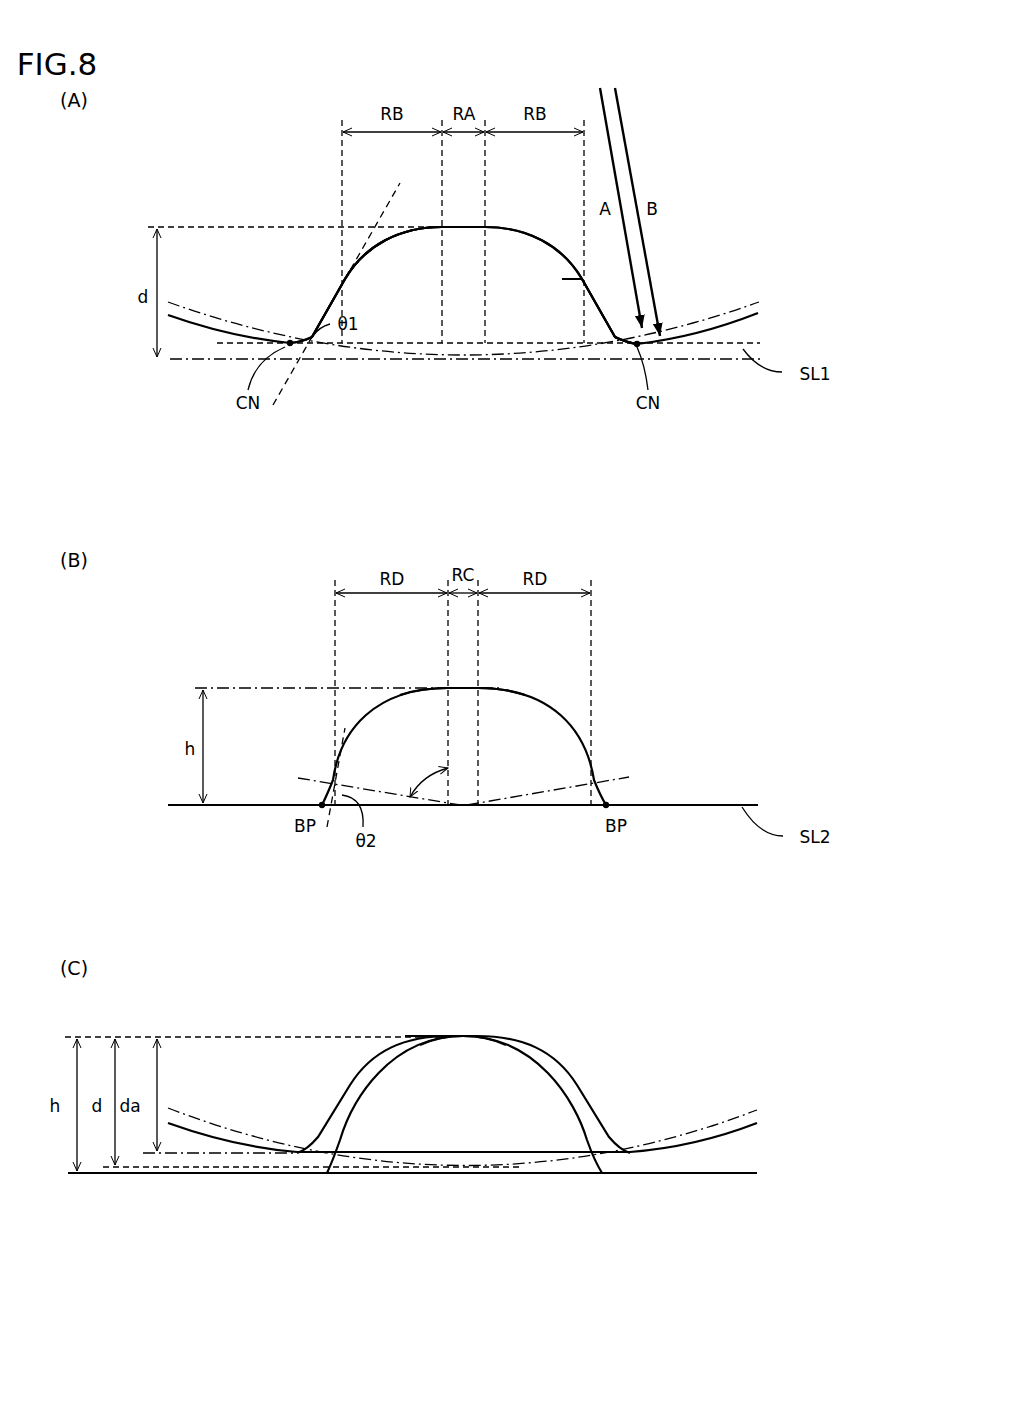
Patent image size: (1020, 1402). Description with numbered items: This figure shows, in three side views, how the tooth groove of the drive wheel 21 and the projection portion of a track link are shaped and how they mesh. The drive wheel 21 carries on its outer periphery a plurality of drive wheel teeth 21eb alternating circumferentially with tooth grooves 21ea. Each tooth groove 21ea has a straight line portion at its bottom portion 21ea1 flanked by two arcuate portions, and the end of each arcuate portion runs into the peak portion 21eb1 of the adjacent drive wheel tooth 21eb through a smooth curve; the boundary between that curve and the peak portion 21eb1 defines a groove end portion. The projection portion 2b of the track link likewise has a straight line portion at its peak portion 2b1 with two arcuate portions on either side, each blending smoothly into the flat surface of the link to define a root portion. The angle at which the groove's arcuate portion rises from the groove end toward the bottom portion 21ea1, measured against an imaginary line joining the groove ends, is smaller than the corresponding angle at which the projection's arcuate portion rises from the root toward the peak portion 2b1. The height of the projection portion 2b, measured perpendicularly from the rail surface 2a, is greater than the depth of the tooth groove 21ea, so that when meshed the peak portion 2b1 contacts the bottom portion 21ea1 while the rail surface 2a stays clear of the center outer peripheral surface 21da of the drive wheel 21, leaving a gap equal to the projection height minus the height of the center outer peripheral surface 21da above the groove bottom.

The drive wheel 21 is at (300, 185).
The tooth groove 21ea is at (530, 237).
The bottom portion of tooth groove 21ea1 is at (462, 225).
The drive wheel tooth 21eb is at (183, 318).
The peak portion of drive wheel tooth 21eb1 is at (212, 320).
The center outer peripheral surface 21da is at (602, 340).
The rail surface 2a is at (702, 805).
The projection portion 2b is at (538, 703).
The peak portion of projection portion 2b1 is at (462, 688).